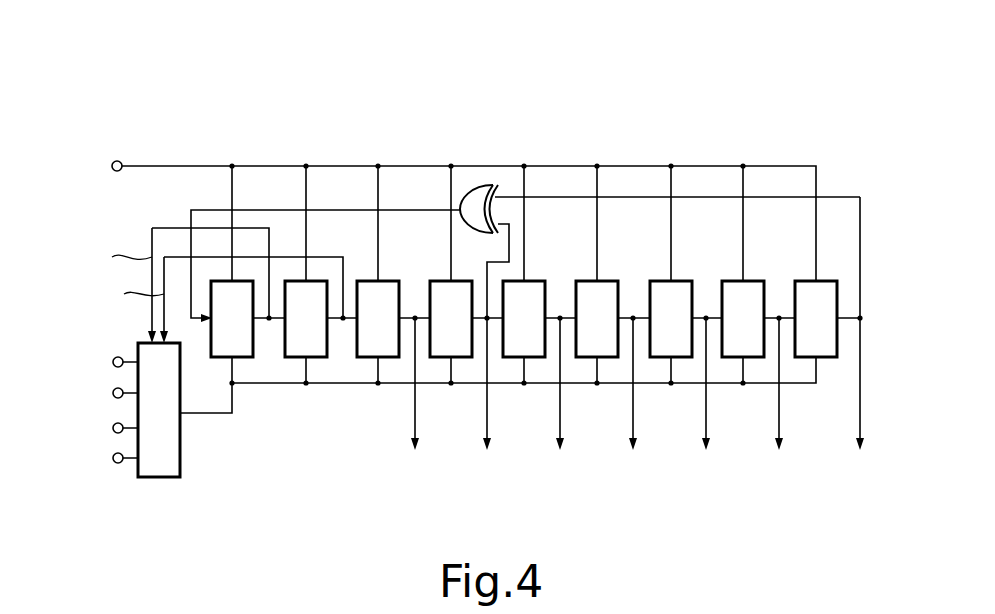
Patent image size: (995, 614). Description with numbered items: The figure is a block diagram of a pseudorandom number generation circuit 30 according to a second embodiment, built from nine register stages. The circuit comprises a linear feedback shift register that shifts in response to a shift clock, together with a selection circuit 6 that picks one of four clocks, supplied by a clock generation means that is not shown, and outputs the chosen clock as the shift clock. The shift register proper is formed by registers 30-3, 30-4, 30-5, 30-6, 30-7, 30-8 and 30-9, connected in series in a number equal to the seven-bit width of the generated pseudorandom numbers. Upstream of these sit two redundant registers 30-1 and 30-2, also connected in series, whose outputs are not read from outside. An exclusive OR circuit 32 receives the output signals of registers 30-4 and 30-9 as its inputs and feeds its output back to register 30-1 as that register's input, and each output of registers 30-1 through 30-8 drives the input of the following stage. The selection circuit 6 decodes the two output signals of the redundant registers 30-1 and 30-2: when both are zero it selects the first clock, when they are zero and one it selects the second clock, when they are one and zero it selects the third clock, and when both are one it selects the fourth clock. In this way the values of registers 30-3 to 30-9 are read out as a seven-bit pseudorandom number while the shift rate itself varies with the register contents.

The pseudorandom number generation circuit 30 is at (216, 107).
The exclusive OR circuit 32 is at (484, 184).
The redundant register 30-1 is at (243, 358).
The redundant register 30-2 is at (319, 358).
The register 30-3 is at (368, 281).
The register 30-4 is at (440, 281).
The register 30-5 is at (532, 281).
The register 30-6 is at (608, 281).
The register 30-7 is at (682, 281).
The register 30-8 is at (753, 281).
The register 30-9 is at (830, 281).
The selection circuit 6 is at (159, 478).